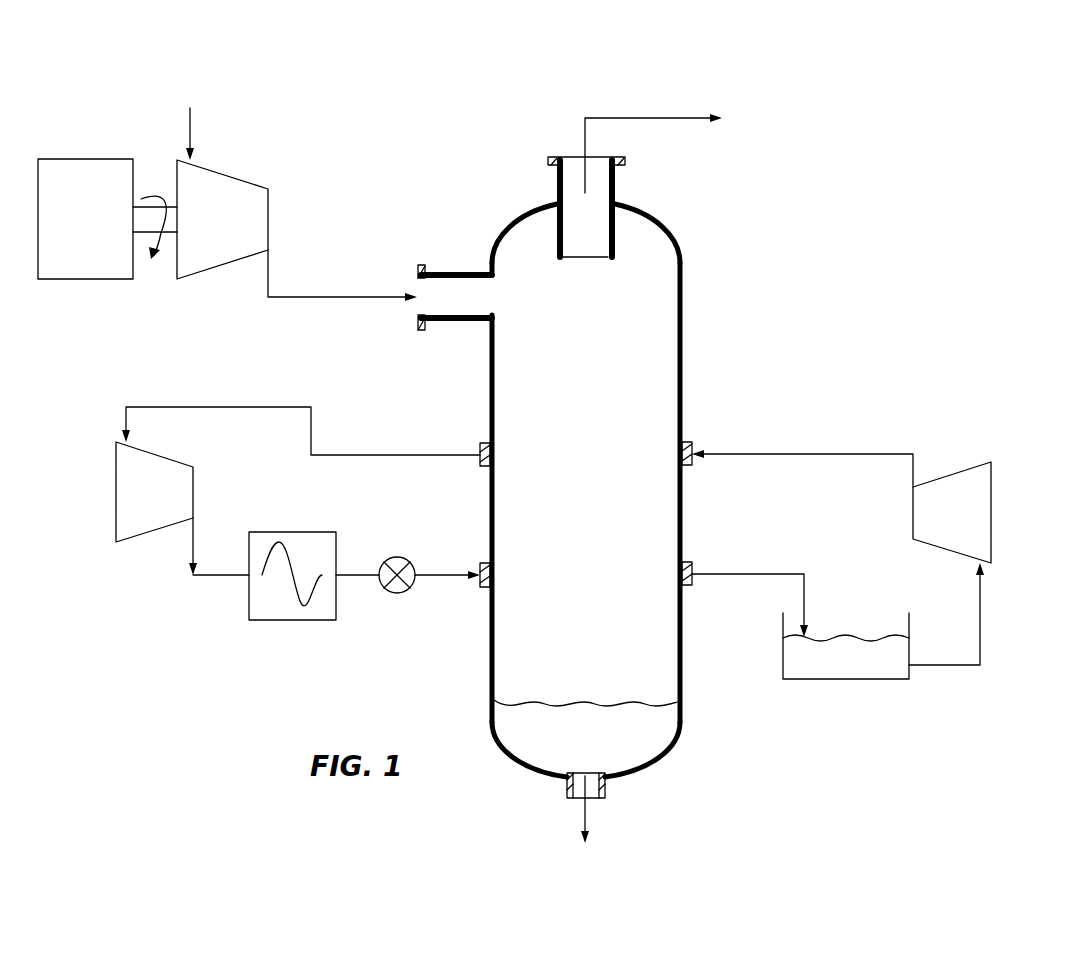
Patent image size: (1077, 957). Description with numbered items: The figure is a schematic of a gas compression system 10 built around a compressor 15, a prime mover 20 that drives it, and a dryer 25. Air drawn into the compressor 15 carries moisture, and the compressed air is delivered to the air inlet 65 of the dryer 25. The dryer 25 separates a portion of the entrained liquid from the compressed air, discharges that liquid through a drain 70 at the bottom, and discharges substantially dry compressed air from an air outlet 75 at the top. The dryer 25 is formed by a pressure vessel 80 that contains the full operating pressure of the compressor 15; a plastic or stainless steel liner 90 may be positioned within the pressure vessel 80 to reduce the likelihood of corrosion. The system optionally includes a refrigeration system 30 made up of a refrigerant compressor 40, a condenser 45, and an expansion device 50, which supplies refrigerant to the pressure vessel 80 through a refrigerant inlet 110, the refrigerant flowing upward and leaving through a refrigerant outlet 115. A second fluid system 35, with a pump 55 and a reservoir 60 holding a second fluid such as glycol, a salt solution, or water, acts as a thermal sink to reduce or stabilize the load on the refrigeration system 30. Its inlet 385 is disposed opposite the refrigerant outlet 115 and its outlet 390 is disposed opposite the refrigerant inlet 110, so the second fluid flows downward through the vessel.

The gas compression system 10 is at (847, 126).
The compressor 15 is at (232, 176).
The prime mover 20 is at (72, 279).
The dryer 25 is at (603, 478).
The refrigeration system 30 is at (271, 548).
The second fluid system 35 is at (874, 560).
The refrigerant compressor 40 is at (116, 490).
The condenser 45 is at (311, 620).
The expansion device 50 is at (396, 593).
The pump 55 is at (992, 505).
The reservoir 60 is at (846, 679).
The air inlet 65 is at (448, 270).
The drain 70 is at (608, 787).
The air outlet 75 is at (557, 187).
The pressure vessel 80 is at (683, 672).
The liner 90 is at (677, 427).
The refrigerant inlet 110 is at (485, 562).
The refrigerant outlet 115 is at (485, 442).
The inlet 385 is at (686, 440).
The outlet 390 is at (686, 560).